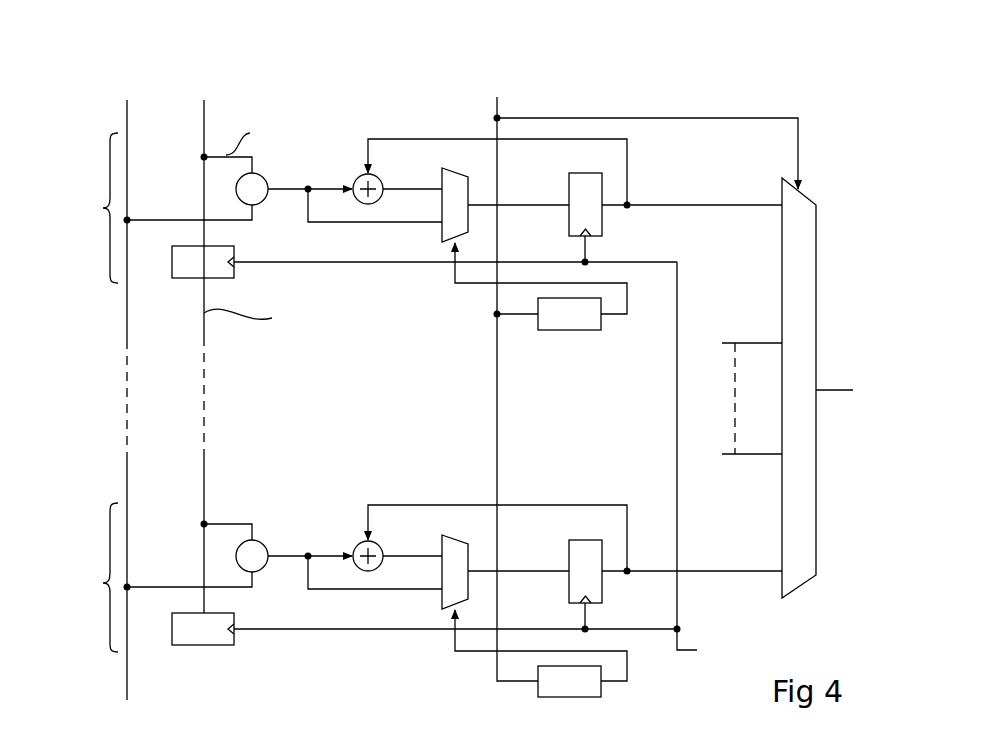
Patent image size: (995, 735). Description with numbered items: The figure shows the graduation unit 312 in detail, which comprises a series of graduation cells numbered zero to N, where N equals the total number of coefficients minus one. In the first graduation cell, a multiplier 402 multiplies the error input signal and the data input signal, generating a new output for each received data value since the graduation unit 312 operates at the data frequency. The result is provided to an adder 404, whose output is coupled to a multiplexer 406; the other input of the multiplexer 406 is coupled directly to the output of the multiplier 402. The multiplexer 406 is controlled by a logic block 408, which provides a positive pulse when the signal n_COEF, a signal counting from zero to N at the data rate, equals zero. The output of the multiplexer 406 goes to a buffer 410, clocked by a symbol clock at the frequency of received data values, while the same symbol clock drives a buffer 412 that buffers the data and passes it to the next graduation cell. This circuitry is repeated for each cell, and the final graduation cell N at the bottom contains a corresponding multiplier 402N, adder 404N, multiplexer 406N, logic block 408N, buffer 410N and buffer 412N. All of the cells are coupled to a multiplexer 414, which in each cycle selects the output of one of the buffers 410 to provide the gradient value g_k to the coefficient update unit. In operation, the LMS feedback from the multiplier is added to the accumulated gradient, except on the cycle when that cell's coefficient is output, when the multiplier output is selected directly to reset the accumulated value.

The graduation unit 312 is at (95, 58).
The multiplier 402 is at (263, 178).
The adder 404 is at (378, 181).
The multiplexer 406 is at (456, 176).
The logic block 408 is at (594, 324).
The buffer 410 is at (602, 219).
The buffer 412 is at (222, 274).
The multiplexer 414 is at (806, 198).
The multiplier 402N is at (263, 545).
The adder 404N is at (378, 548).
The multiplexer 406N is at (468, 533).
The logic block 408N is at (594, 691).
The buffer 410N is at (602, 586).
The buffer 412N is at (222, 641).